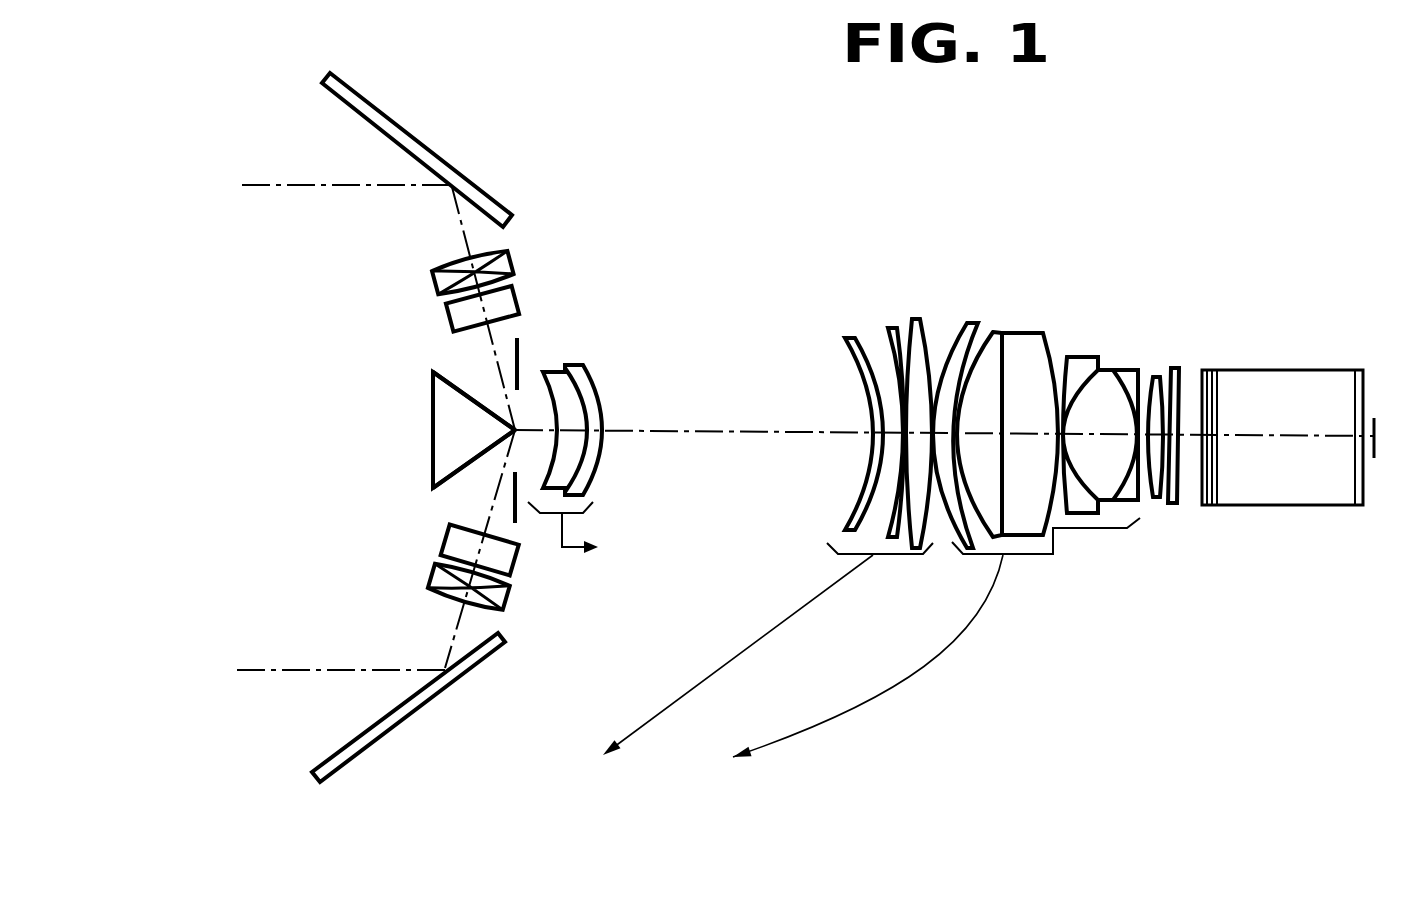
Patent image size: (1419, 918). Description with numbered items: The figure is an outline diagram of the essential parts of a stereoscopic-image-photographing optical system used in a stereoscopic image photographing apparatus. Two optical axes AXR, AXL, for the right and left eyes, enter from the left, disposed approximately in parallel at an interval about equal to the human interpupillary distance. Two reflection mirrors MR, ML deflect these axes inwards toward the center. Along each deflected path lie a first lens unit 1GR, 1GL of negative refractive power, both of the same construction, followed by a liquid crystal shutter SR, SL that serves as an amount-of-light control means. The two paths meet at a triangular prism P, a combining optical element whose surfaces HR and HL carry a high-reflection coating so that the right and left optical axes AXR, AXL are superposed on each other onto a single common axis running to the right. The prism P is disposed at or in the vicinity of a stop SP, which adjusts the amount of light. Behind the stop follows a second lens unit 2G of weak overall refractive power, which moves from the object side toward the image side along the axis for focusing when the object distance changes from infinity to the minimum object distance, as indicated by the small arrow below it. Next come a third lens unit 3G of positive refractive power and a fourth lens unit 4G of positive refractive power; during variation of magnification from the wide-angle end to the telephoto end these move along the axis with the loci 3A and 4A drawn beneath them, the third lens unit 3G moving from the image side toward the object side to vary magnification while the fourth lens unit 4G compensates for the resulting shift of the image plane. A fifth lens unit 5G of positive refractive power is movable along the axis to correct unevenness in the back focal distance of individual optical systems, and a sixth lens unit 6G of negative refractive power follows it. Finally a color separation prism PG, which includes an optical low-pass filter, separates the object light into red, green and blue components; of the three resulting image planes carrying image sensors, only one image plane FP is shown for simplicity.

The reflection mirror for right eye MR is at (415, 138).
The reflection mirror for left eye ML is at (417, 713).
The optical axis for right eye AXR is at (327, 185).
The optical axis for left eye AXL is at (330, 672).
The first lens unit for right eye 1GR is at (433, 270).
The first lens unit for left eye 1GL is at (427, 587).
The liquid crystal shutter for right eye SR is at (522, 295).
The liquid crystal shutter for left eye SL is at (520, 563).
The stop SP is at (520, 363).
The triangular prism P is at (432, 427).
The reflective surface of prism for right eye HR is at (457, 380).
The reflective surface of prism for left eye HL is at (453, 490).
The second lens unit 2G is at (595, 505).
The third lens unit 3G is at (830, 547).
The fourth lens unit 4G is at (978, 554).
The locus of third lens unit 3A is at (738, 655).
The locus of fourth lens unit 4A is at (868, 656).
The fifth lens unit 5G is at (1160, 377).
The sixth lens unit 6G is at (1173, 370).
The color separation prism PG is at (1287, 368).
The image plane FP is at (1373, 458).